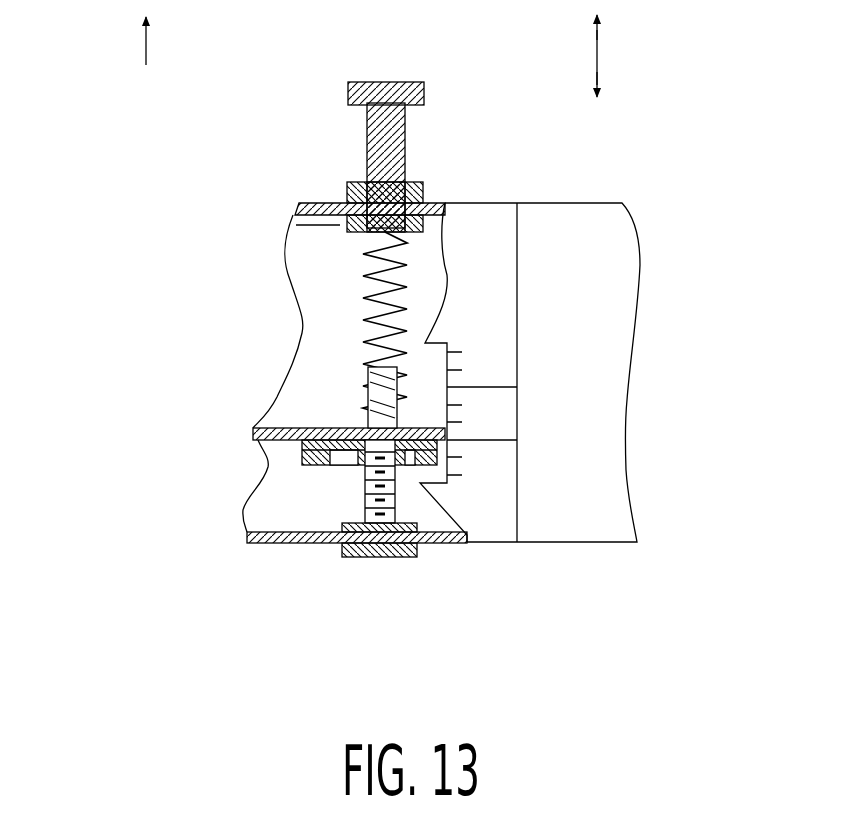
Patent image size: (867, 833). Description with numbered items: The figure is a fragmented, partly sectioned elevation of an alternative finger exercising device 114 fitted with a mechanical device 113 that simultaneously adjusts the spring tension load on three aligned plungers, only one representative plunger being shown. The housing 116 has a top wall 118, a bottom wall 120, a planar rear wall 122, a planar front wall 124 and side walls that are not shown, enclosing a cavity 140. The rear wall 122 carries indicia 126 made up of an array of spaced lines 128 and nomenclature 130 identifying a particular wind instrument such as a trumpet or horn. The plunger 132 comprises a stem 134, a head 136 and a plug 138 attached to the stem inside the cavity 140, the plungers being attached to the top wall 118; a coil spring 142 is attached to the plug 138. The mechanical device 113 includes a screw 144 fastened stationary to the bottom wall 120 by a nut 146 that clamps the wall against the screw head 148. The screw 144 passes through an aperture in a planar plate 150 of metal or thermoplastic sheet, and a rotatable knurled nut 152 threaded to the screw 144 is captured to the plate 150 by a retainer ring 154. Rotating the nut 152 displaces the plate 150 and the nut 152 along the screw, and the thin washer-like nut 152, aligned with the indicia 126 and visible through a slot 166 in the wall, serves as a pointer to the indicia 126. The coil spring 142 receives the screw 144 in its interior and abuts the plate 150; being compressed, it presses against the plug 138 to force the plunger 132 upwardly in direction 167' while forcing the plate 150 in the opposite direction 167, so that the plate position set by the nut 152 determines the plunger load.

The mechanical device 113 is at (350, 513).
The finger exercising device 114 is at (245, 207).
The housing 116 is at (608, 203).
The top wall 118 is at (300, 203).
The bottom wall 120 is at (305, 545).
The rear wall 122 is at (620, 270).
The front wall 124 is at (300, 277).
The indicia 126 is at (487, 455).
The spaced lines 128 is at (457, 352).
The nomenclature 130 is at (545, 438).
The plunger 132 is at (452, 112).
The stem 134 is at (367, 140).
The head 136 is at (349, 92).
The plug 138 is at (296, 225).
The cavity 140 is at (303, 363).
The coil spring 142 is at (305, 310).
The screw 144 is at (450, 545).
The nut 146 is at (398, 490).
The screw head 148 is at (400, 557).
The plate 150 is at (255, 430).
The knurled nut 152 is at (365, 462).
The retainer ring 154 is at (300, 452).
The slot 166 is at (433, 367).
The direction 167 is at (651, 51).
The direction 167' is at (94, 43).